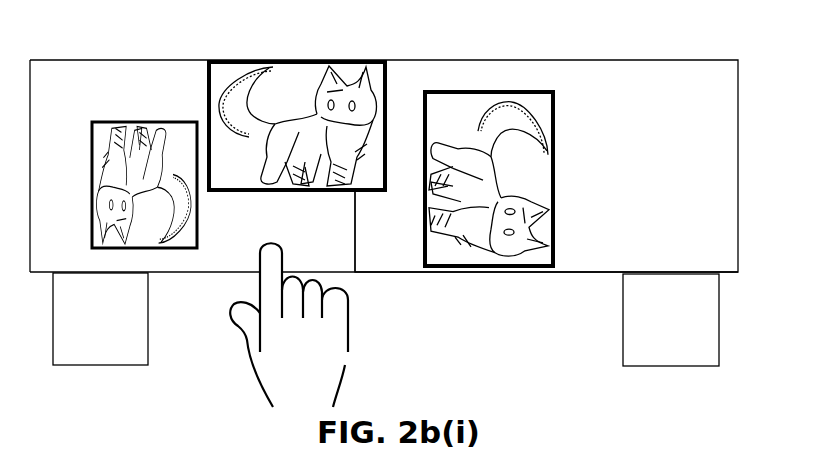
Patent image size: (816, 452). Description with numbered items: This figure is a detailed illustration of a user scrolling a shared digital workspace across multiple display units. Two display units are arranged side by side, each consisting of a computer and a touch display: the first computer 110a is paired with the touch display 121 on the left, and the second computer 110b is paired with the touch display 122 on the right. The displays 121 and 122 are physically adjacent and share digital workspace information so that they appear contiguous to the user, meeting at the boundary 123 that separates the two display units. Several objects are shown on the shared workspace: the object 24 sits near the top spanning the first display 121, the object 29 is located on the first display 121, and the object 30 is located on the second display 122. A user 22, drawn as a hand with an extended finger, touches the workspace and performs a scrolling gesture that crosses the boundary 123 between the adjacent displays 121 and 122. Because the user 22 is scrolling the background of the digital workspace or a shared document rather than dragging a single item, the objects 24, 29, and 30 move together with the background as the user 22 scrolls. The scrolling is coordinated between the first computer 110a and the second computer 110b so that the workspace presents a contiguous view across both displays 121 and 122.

The user 22 is at (328, 350).
The object 24 is at (292, 77).
The object 29 is at (107, 135).
The object 30 is at (478, 103).
The computer 110a is at (135, 308).
The computer 110b is at (635, 298).
The touch display 121 is at (142, 68).
The touch display 122 is at (588, 70).
The boundary 123 is at (355, 245).